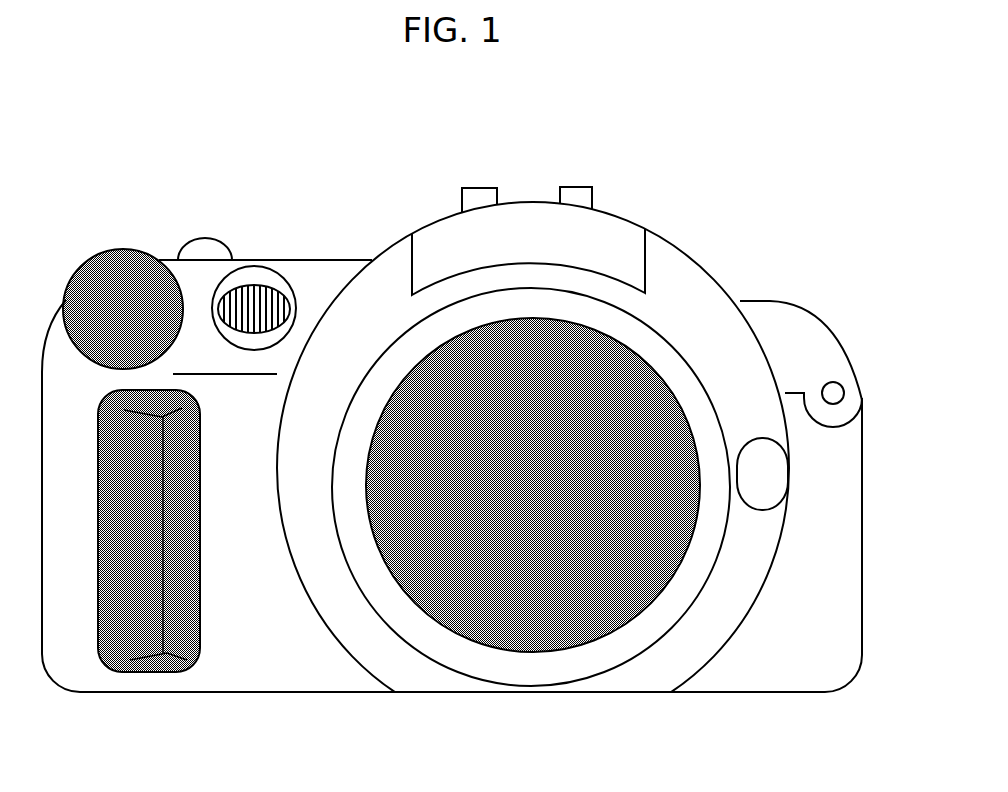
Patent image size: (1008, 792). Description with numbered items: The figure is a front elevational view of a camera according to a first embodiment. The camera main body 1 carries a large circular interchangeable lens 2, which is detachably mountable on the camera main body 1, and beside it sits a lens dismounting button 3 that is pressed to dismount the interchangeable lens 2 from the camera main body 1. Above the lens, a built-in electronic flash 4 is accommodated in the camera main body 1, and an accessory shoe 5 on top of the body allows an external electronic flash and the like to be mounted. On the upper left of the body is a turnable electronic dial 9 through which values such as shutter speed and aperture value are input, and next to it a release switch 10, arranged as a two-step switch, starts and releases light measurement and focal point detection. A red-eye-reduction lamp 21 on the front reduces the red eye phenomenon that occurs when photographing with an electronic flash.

The camera main body 1 is at (770, 300).
The interchangeable lens 2 is at (518, 635).
The lens dismounting button 3 is at (778, 477).
The built-in electronic flash 4 is at (617, 219).
The accessory shoe 5 is at (578, 187).
The turnable electronic dial 9 is at (100, 252).
The release switch 10 is at (203, 238).
The red-eye-reduction lamp 21 is at (259, 268).